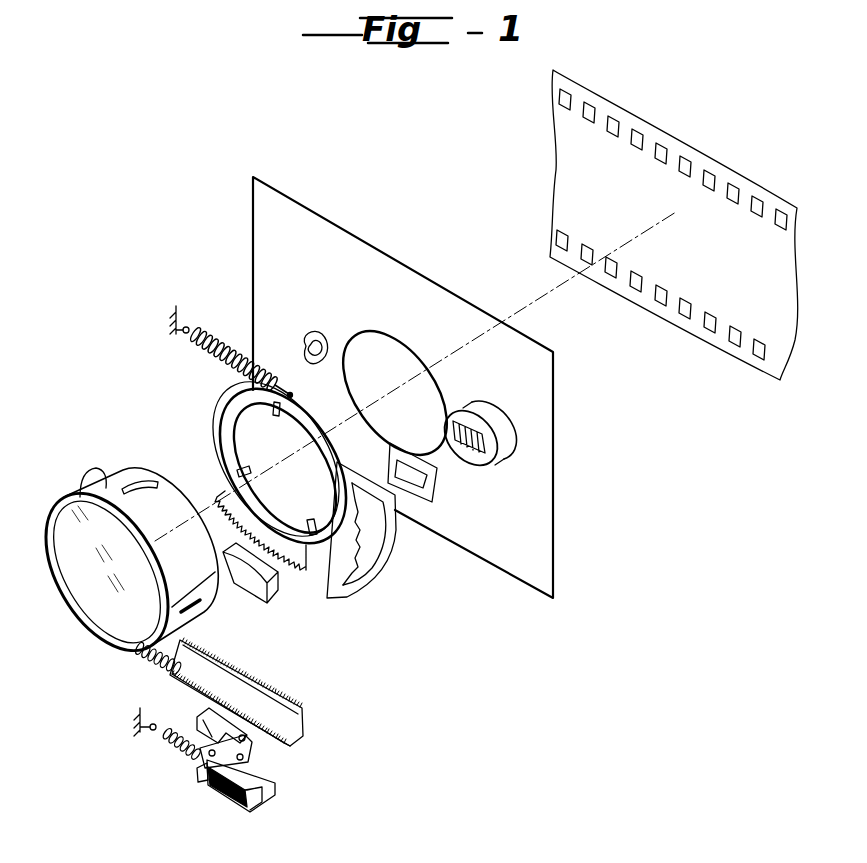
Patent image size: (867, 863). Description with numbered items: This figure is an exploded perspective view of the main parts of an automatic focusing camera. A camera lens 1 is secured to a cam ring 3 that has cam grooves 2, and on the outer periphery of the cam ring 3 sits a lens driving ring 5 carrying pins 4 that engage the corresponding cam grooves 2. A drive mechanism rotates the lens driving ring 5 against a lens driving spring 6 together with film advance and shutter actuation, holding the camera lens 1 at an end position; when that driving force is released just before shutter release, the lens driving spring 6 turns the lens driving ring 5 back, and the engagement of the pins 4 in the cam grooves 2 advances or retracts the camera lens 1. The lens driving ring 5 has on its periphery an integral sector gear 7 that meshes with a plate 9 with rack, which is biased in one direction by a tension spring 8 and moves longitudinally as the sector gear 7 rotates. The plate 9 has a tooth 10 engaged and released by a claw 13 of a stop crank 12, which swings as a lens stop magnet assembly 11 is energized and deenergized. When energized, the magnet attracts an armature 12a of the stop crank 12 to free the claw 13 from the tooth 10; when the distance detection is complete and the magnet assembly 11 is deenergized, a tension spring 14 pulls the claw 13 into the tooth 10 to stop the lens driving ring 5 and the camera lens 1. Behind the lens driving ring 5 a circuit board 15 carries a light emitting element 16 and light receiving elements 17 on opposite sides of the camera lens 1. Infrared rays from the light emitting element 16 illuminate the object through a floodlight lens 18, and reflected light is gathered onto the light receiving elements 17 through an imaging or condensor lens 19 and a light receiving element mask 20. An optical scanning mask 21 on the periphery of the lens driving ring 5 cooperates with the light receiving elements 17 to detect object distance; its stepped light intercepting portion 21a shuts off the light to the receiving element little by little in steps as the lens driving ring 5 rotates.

The camera lens 1 is at (92, 610).
The cam grooves 2 is at (138, 484).
The cam ring 3 is at (172, 482).
The pins 4 is at (250, 470).
The lens driving ring 5 is at (330, 424).
The lens driving spring 6 is at (232, 355).
The sector gear 7 is at (306, 575).
The tension spring 8 is at (152, 662).
The plate with rack 9 is at (290, 700).
The tooth 10 is at (280, 746).
The lens stop magnet assembly 11 is at (262, 800).
The stop crank 12 is at (190, 760).
The armature 12a is at (200, 782).
The claw 13 is at (203, 716).
The tension spring 14 is at (162, 748).
The circuit board 15 is at (545, 366).
The light emitting element 16 is at (318, 342).
The light receiving elements 17 is at (498, 450).
The floodlight lens 18 is at (88, 470).
The imaging or condensor lens 19 is at (258, 587).
The light receiving element mask 20 is at (437, 500).
The optical scanning mask 21 is at (390, 540).
The stepped light intercepting portion 21a is at (372, 525).